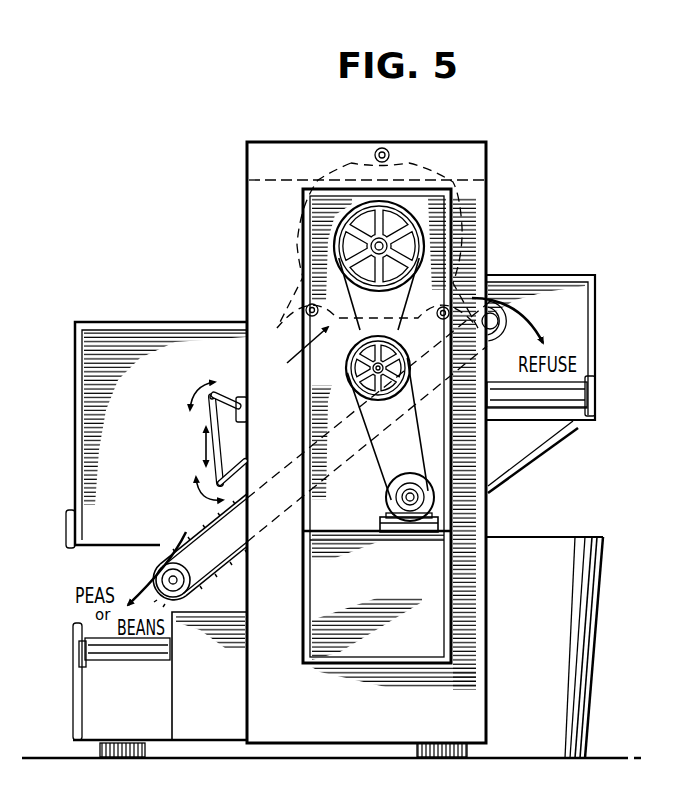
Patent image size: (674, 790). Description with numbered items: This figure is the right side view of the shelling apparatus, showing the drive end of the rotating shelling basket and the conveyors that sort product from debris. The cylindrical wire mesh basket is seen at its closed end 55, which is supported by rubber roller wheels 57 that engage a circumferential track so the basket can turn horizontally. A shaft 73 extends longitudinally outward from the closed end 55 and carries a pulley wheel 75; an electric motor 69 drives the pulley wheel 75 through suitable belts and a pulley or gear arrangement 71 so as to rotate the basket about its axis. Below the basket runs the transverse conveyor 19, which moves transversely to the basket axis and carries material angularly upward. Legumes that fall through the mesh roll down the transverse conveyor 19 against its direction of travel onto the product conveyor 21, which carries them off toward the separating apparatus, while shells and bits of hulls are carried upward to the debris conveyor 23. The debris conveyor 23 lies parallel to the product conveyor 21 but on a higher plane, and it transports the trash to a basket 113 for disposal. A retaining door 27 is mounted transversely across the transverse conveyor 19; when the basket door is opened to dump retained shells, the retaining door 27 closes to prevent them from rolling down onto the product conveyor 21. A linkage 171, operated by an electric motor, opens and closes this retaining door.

The transverse conveyor 19 is at (212, 520).
The product conveyor 21 is at (115, 652).
The debris conveyor 23 is at (552, 398).
The retaining door 27 is at (242, 468).
The closed end 55 is at (404, 166).
The rubber roller wheels 57 is at (374, 151).
The electric motor 69 is at (440, 525).
The pulley or gear arrangement 71 is at (330, 373).
The shaft 73 is at (386, 256).
The pulley wheel 75 is at (426, 244).
The basket 113 is at (550, 640).
The linkage 171 is at (205, 420).